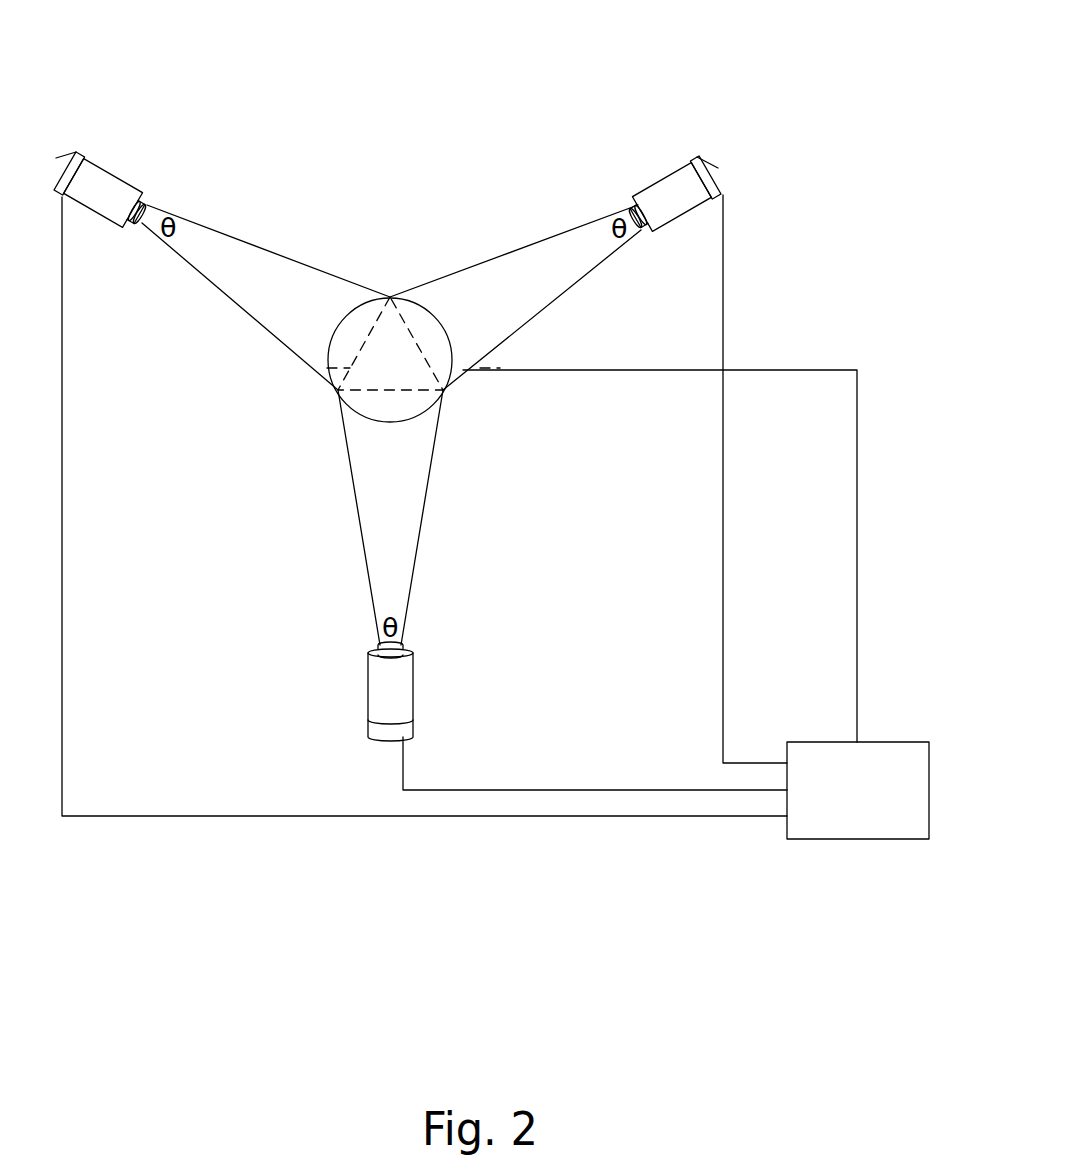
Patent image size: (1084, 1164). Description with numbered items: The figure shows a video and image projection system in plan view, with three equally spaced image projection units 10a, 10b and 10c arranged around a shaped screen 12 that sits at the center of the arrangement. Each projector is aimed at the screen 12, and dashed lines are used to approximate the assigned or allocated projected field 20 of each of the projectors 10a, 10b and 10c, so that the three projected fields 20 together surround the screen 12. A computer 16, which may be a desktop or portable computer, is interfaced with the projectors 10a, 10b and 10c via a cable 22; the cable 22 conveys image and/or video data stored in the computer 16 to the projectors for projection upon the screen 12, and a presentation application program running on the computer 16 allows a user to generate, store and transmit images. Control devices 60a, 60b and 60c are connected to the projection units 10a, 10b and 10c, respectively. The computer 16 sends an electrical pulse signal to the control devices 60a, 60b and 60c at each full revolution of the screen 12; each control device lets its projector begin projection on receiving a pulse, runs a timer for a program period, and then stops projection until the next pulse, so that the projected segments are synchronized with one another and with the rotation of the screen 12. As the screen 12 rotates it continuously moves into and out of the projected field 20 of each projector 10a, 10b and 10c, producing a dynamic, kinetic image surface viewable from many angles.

The image projection unit 10a is at (103, 193).
The image projection unit 10b is at (692, 208).
The image projection unit 10c is at (390, 691).
The shaped screen 12 is at (391, 352).
The computer 16 is at (858, 790).
The projected field 20 is at (335, 372).
The cable 22 is at (513, 867).
The control device 60a is at (80, 155).
The control device 60b is at (697, 157).
The control device 60c is at (370, 725).